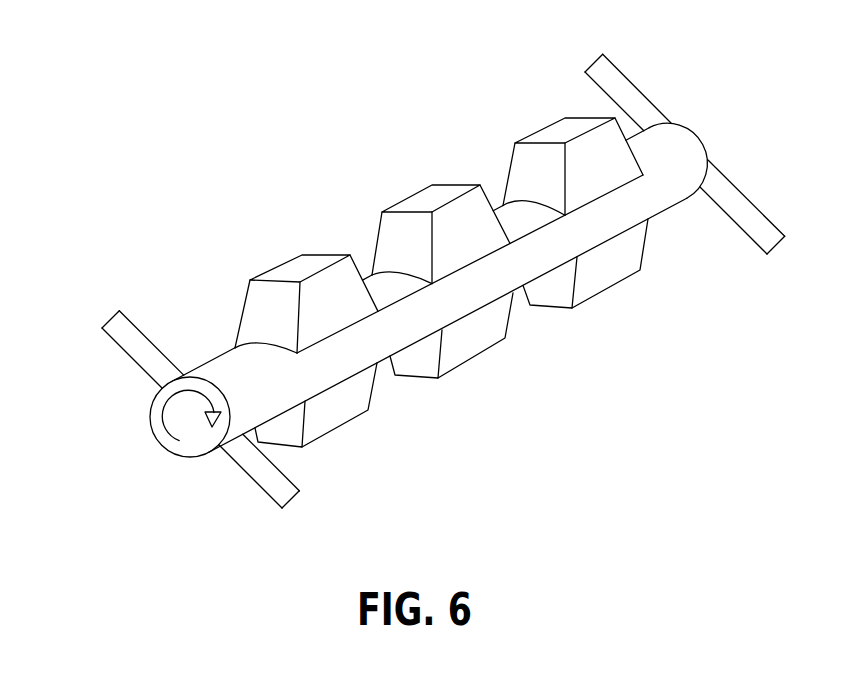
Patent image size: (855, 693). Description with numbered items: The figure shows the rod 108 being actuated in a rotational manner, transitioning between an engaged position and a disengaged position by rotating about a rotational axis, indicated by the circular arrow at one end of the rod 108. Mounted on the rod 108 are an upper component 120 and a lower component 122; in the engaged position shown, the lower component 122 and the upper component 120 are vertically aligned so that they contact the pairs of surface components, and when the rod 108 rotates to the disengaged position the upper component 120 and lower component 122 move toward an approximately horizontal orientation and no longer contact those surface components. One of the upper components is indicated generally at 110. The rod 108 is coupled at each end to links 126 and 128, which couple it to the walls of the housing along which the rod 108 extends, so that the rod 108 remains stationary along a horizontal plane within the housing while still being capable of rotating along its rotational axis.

The rod 108 is at (226, 353).
The cutting block 110 is at (284, 251).
The upper component 120 is at (343, 314).
The lower component 122 is at (350, 416).
The link 126 is at (112, 323).
The link 128 is at (598, 62).